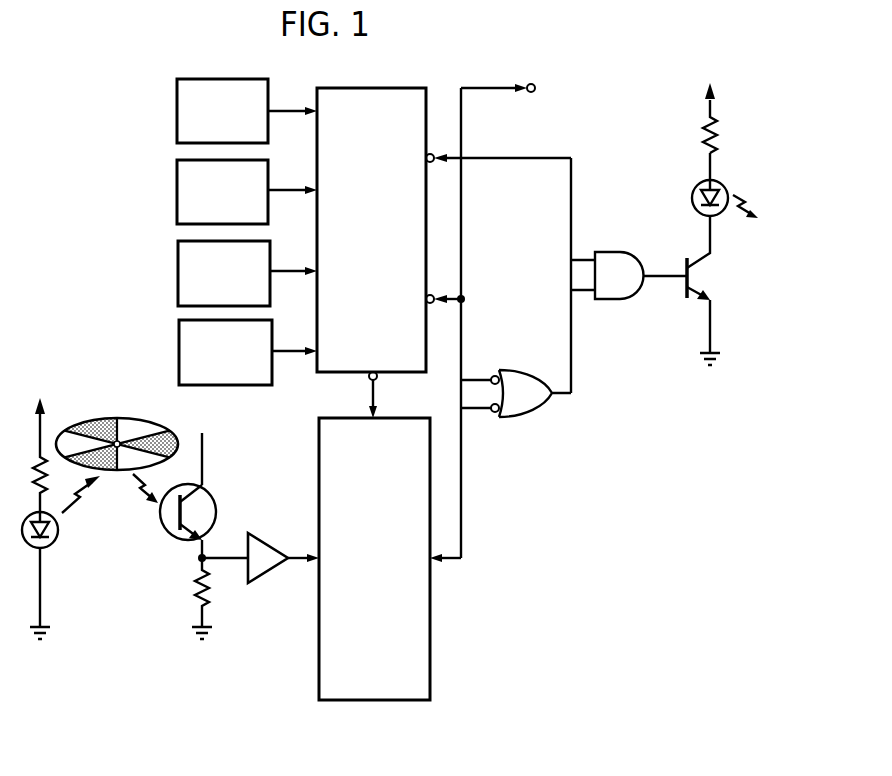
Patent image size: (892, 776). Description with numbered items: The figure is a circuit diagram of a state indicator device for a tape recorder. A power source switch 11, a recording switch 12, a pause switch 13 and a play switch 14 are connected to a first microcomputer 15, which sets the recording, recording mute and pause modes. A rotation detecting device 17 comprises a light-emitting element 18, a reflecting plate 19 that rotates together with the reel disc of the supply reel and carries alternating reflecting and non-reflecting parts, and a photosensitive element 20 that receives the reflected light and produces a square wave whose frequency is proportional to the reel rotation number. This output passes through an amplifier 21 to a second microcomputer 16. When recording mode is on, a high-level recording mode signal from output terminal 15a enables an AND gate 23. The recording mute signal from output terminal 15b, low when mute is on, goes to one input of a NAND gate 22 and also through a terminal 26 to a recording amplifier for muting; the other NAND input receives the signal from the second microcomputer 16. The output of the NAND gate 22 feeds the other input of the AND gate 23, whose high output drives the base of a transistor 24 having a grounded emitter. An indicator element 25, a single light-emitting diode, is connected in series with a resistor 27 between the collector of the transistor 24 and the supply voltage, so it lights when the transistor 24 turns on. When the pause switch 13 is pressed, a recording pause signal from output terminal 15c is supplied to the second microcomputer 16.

The power source switch 11 is at (177, 107).
The recording switch 12 is at (177, 190).
The pause switch 13 is at (178, 269).
The play switch 14 is at (179, 348).
The first microcomputer 15 is at (359, 88).
The output terminal 15a is at (434, 156).
The output terminal 15b is at (434, 297).
The output terminal 15c is at (378, 379).
The second microcomputer 16 is at (430, 621).
The rotation detecting device 17 is at (188, 432).
The light-emitting element 18 is at (54, 544).
The reflecting plate 19 is at (110, 418).
The photosensitive element 20 is at (215, 501).
The amplifier 21 is at (270, 542).
The NAND gate 22 is at (526, 371).
The AND gate 23 is at (612, 252).
The transistor 24 is at (679, 290).
The indicator element 25 is at (692, 192).
The terminal 26 is at (532, 84).
The resistor 27 is at (706, 124).